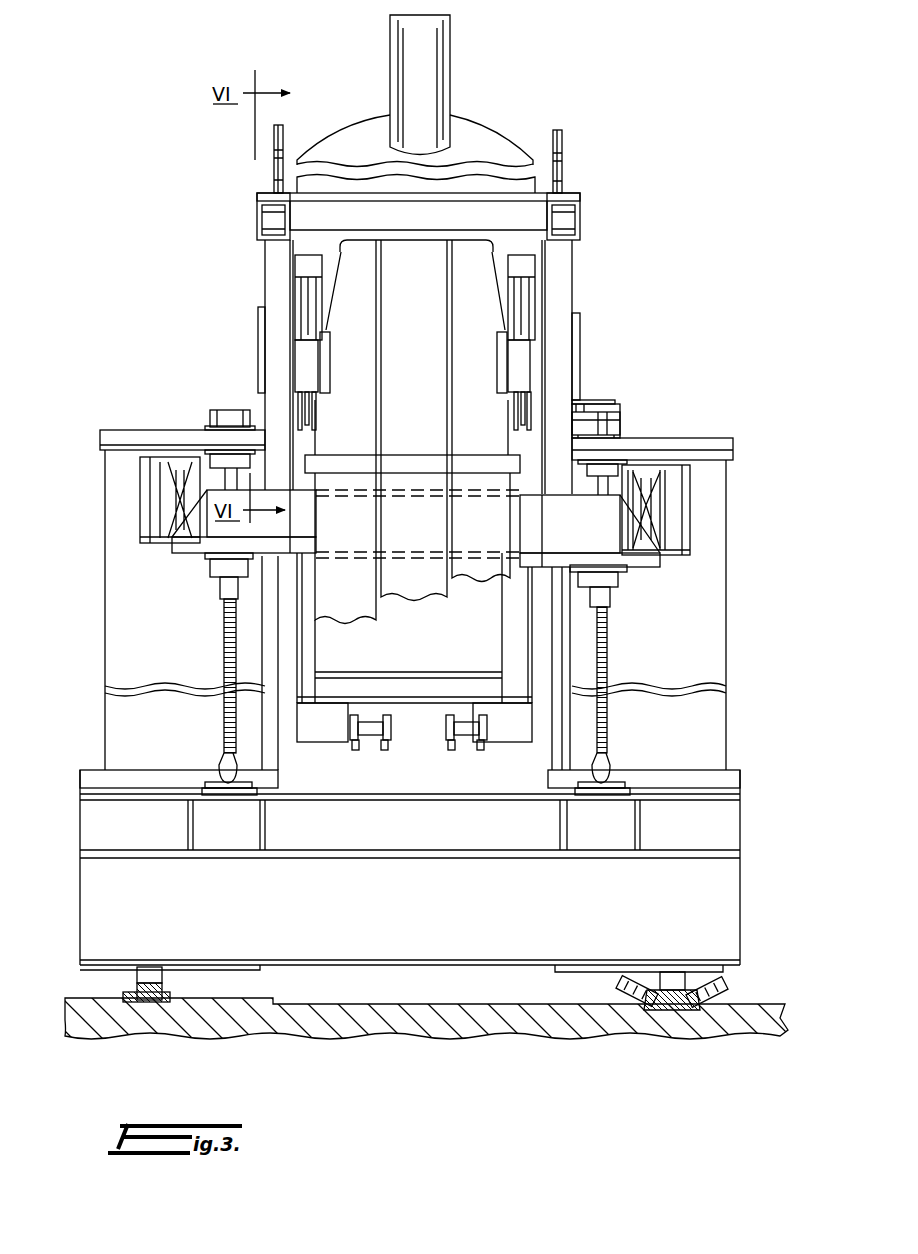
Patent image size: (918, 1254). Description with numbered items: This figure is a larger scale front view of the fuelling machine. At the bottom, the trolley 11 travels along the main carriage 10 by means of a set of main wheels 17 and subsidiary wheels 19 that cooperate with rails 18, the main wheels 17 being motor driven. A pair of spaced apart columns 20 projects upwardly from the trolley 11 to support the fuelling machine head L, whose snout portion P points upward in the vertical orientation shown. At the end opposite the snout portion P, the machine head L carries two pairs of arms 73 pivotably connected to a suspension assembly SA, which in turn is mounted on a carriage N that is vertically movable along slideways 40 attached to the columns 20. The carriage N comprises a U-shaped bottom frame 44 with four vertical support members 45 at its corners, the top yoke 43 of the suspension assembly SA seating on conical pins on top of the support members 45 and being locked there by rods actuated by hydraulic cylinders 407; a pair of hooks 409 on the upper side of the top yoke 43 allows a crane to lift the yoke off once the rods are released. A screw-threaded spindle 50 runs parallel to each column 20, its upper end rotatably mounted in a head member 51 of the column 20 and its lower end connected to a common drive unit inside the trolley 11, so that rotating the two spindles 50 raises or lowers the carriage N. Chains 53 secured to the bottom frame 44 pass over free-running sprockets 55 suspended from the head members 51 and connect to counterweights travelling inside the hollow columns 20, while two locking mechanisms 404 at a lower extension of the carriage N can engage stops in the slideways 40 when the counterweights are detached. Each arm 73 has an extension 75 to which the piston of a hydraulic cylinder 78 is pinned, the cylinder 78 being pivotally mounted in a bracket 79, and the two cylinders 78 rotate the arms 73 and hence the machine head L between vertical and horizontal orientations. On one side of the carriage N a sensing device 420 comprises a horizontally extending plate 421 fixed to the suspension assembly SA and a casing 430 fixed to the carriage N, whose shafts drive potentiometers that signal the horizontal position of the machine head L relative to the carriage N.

The snout portion P is at (433, 48).
The fuelling machine head L is at (486, 130).
The suspension assembly SA is at (602, 283).
The carriage N is at (240, 406).
The hooks 409 is at (283, 136).
The hydraulic cylinders 407 is at (262, 220).
The vertical support members 45 is at (266, 272).
The top yoke 43 is at (420, 240).
The arms 73 is at (333, 249).
The hydraulic cylinders 78 is at (310, 312).
The bracket 79 is at (325, 368).
The extension 75 is at (314, 402).
The U-shaped bottom frame 44 is at (218, 543).
The head member 51 is at (121, 430).
The columns 20 is at (105, 606).
The screw-threaded spindle 50 is at (225, 646).
The free-running sprockets 55 is at (150, 486).
The chains 53 is at (176, 510).
The horizontally extending plate 421 is at (598, 400).
The sensing device 420 is at (622, 410).
The casing 430 is at (592, 424).
The slideways 40 is at (280, 648).
The locking mechanisms 404 is at (325, 736).
The trolley 11 is at (725, 891).
The main wheels 17 is at (151, 971).
The rails 18 is at (150, 1002).
The subsidiary wheels 19 is at (622, 988).
The main carriage 10 is at (391, 1036).